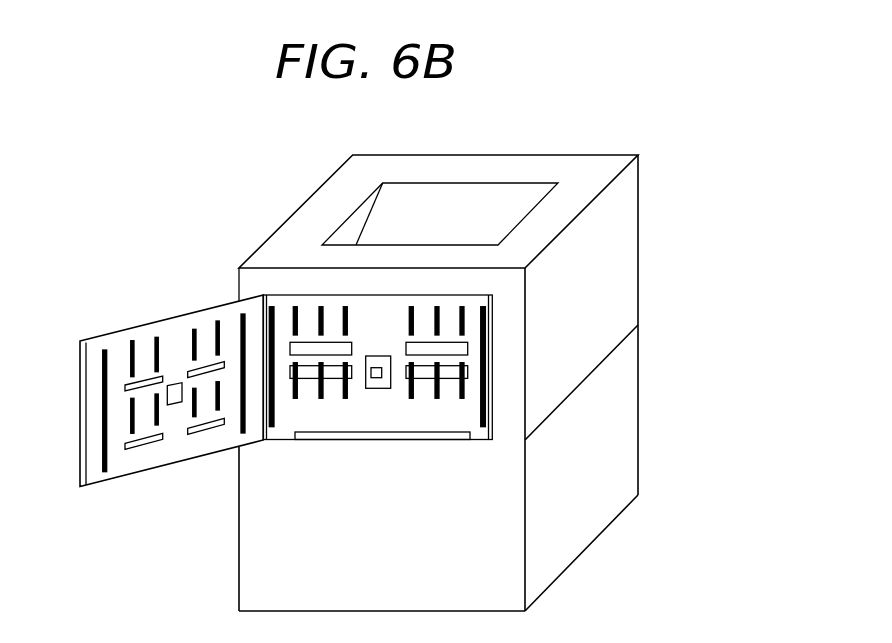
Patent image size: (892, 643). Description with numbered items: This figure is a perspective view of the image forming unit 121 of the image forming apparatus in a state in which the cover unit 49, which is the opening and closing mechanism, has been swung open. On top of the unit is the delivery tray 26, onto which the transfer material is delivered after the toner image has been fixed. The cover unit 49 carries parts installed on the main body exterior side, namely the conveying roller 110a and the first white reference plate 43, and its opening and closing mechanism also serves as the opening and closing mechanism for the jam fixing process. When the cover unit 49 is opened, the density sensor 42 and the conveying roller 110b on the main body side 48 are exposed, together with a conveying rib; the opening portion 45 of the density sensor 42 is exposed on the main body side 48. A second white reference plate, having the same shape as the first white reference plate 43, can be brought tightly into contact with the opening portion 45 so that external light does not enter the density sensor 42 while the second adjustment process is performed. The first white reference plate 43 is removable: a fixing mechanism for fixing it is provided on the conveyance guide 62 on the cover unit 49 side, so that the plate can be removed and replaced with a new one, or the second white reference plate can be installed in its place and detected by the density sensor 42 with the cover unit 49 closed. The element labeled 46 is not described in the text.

The image forming unit 121 is at (340, 197).
The delivery tray 26 is at (468, 217).
The main body side 48 is at (453, 303).
The conveying roller 110b is at (330, 343).
The slots in recess 46 is at (347, 383).
The density sensor 42 is at (375, 356).
The opening portion 45 is at (376, 388).
The cover unit 49 is at (122, 342).
The conveyance guide 62 is at (177, 428).
The conveying roller 110a is at (207, 360).
The first white reference plate 43 is at (175, 402).